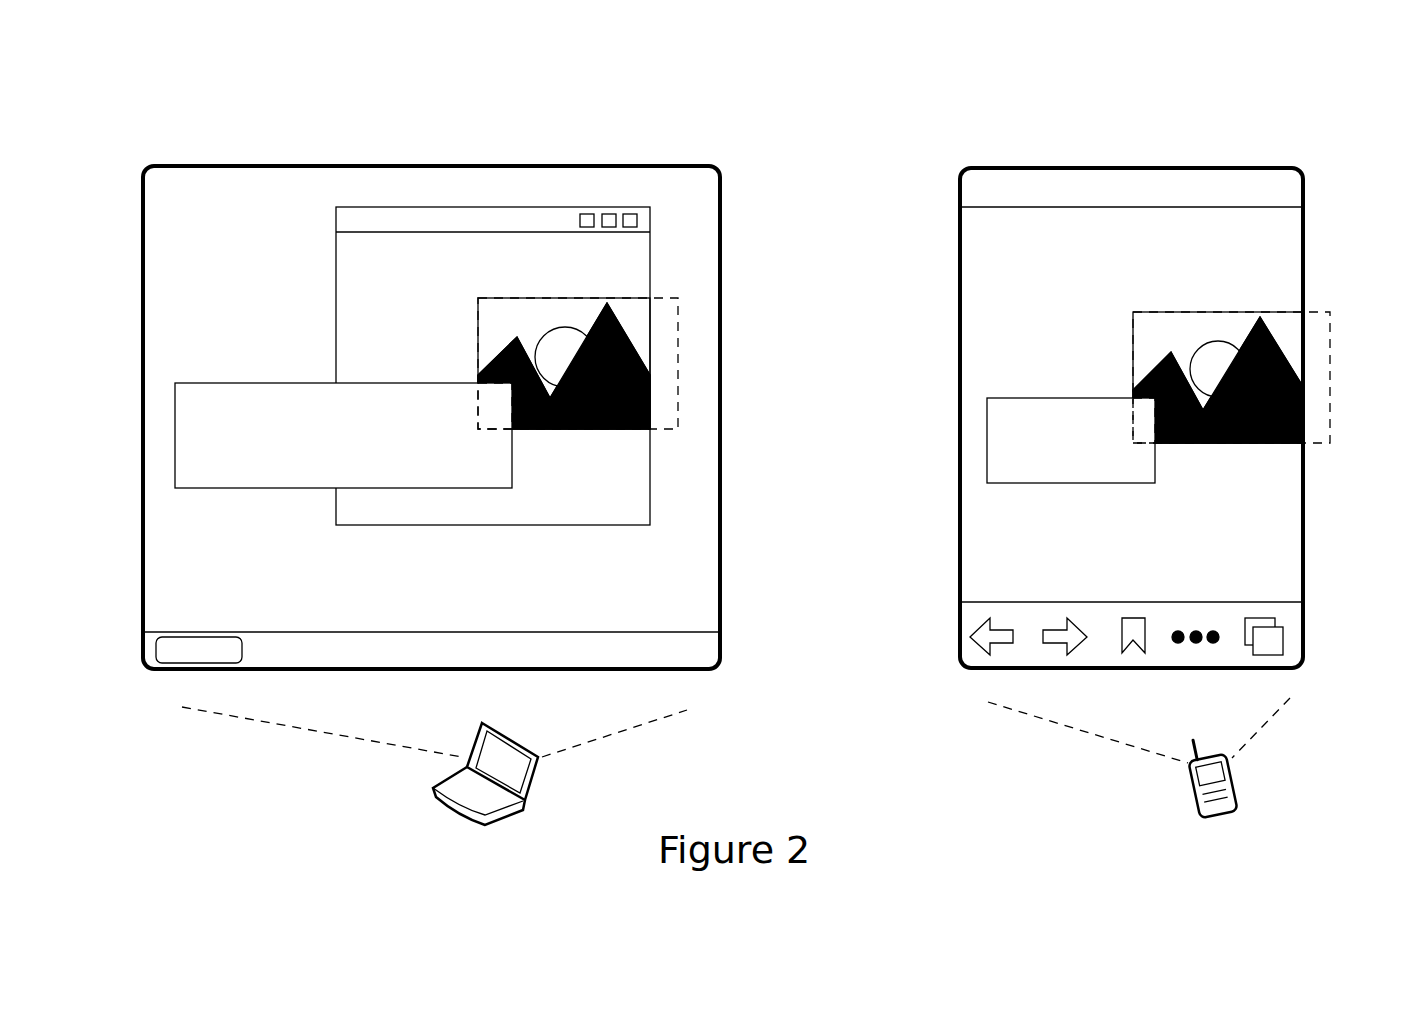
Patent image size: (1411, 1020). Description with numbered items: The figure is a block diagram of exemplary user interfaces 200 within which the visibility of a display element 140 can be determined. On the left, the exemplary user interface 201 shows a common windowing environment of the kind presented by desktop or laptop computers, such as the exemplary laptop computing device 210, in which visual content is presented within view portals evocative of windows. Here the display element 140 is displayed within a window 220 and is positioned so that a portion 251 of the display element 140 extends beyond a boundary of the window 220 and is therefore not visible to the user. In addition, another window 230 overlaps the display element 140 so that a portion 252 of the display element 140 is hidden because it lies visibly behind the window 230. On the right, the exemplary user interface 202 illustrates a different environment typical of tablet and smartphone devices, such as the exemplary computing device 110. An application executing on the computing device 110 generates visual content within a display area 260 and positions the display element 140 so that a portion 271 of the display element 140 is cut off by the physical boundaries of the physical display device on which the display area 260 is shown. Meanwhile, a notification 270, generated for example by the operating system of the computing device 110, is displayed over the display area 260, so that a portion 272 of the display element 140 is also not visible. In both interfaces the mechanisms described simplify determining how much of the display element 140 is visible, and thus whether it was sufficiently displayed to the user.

The exemplary user interfaces 200 is at (232, 93).
The exemplary user interface 201 is at (461, 113).
The exemplary user interface 202 is at (1126, 113).
The window 220 is at (335, 274).
The window 230 is at (280, 382).
The display element 140 is at (538, 298).
The portion of the display element 251 is at (667, 348).
The portion of the display element 252 is at (498, 412).
The laptop computing device 210 is at (535, 772).
The display area 260 is at (975, 255).
The notification 270 is at (1033, 485).
The portion of the display element 271 is at (1318, 367).
The portion of the display element 272 is at (1143, 428).
The computing device 110 is at (1233, 778).